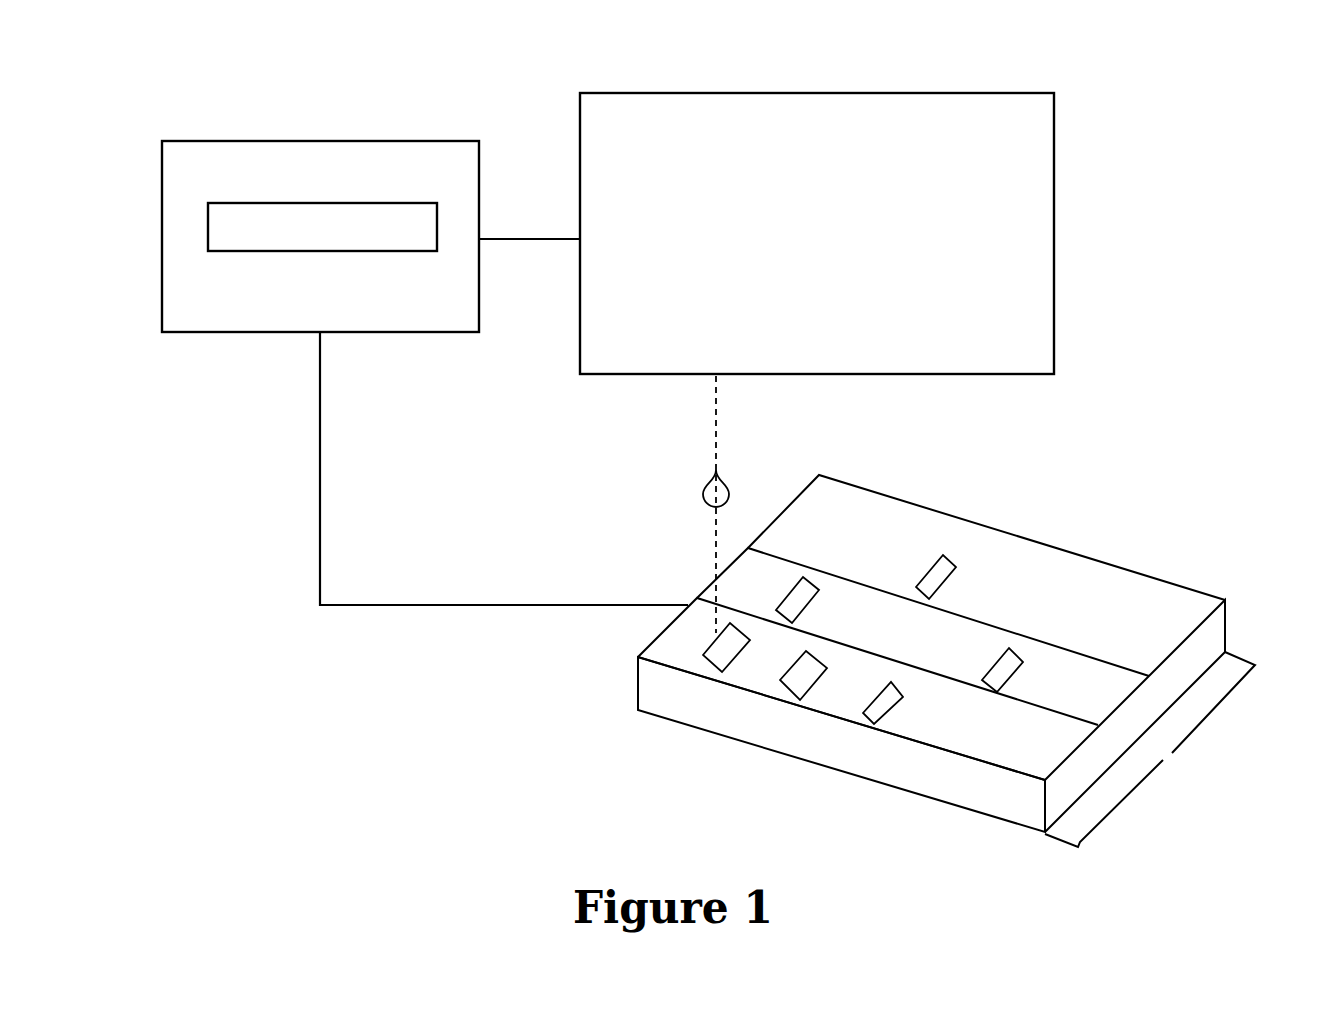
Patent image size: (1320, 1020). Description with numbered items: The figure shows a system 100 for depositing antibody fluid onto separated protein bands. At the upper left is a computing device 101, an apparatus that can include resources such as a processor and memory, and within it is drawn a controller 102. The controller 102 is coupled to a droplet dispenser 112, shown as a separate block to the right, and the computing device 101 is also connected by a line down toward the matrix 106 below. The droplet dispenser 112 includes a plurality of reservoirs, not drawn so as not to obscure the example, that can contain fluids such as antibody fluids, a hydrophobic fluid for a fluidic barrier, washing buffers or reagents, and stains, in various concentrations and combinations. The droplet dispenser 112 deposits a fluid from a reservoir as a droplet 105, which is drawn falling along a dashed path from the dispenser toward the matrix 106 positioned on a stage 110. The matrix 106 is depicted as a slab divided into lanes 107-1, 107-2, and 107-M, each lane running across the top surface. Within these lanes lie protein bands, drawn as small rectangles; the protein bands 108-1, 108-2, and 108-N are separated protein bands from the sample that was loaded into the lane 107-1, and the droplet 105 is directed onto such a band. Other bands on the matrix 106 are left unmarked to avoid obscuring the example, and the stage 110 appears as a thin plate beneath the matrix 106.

The system 100 is at (243, 69).
The computing device 101 is at (450, 182).
The controller 102 is at (412, 236).
The droplet dispenser 112 is at (940, 177).
The droplet 105 is at (703, 493).
The matrix 106 is at (1149, 626).
The lane 107-1 is at (680, 645).
The lane 107-2 is at (740, 578).
The lane 107-M is at (812, 513).
The protein band 108-1 is at (700, 665).
The protein band 108-2 is at (785, 697).
The protein band 108-N is at (867, 720).
The stage 110 is at (1172, 753).